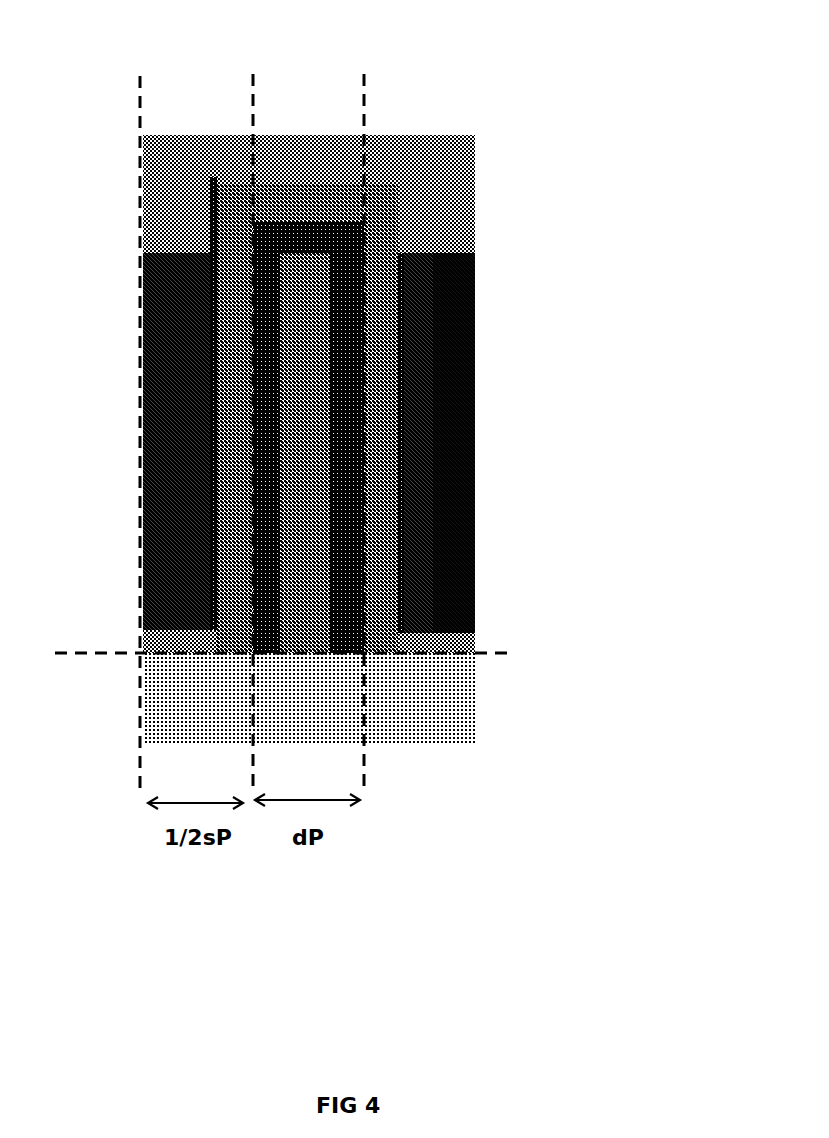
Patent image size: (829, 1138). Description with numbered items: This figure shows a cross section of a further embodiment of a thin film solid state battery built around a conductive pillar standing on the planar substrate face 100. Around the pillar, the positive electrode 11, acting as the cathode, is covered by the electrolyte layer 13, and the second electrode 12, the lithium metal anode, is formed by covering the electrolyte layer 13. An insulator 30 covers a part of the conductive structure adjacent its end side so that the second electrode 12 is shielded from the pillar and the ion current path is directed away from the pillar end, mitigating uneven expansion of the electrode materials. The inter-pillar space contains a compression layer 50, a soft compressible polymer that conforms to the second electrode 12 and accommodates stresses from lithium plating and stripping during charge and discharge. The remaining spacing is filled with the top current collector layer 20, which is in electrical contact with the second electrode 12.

The top current collector layer 20 is at (197, 135).
The insulator 30 is at (397, 185).
The electrolyte layer 13 is at (375, 350).
The second electrode 12 is at (433, 443).
The compression layer 50 is at (457, 493).
The positive electrode 11 is at (350, 592).
The substrate face 100 is at (460, 707).